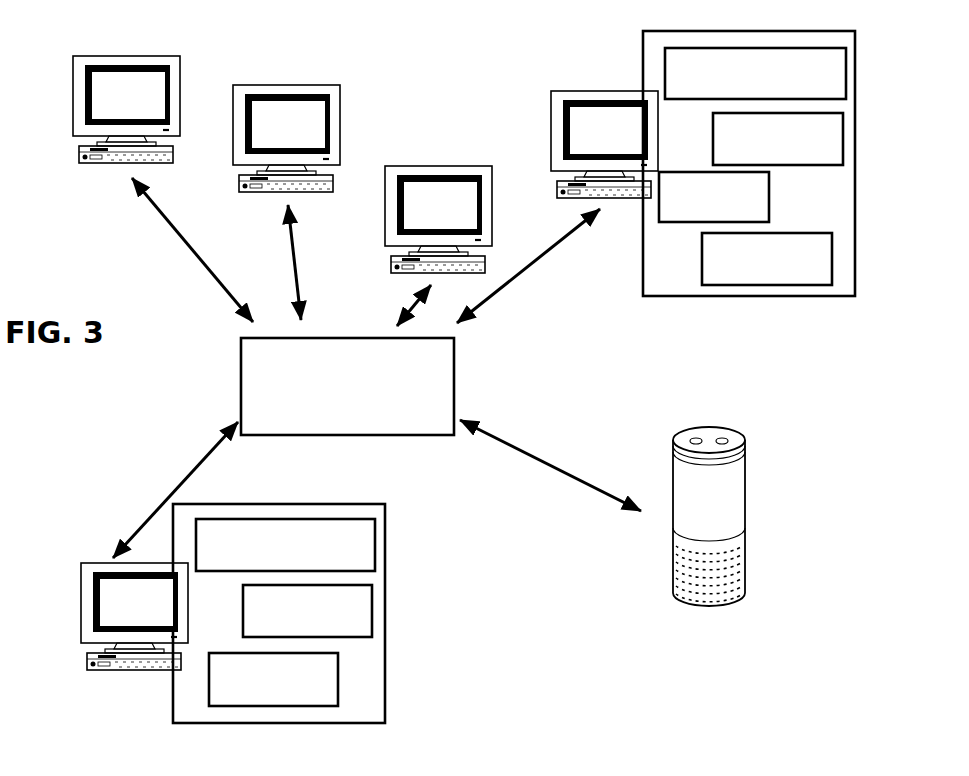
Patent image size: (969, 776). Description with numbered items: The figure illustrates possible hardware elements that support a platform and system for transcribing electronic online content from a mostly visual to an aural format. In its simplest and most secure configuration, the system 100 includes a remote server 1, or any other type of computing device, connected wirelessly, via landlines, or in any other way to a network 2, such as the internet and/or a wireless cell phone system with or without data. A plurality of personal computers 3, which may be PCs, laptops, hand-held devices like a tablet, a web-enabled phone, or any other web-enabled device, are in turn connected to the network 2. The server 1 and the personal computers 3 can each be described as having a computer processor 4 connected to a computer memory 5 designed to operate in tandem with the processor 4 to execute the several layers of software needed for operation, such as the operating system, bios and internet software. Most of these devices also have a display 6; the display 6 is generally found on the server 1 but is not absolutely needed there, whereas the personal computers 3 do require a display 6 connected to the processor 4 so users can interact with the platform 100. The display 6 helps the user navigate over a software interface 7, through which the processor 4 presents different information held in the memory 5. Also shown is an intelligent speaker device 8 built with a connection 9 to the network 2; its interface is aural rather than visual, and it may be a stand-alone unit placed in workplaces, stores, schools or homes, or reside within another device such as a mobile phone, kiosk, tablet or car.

The system 100 is at (510, 74).
The remote server 1 is at (80, 580).
The network 2 is at (241, 408).
The personal computers 3 is at (183, 80).
The computer processor 4 is at (802, 48).
The computer memory 5 is at (843, 132).
The display 6 is at (767, 202).
The software interface 7 is at (832, 248).
The intelligent speaker device 8 is at (746, 475).
The connection 9 is at (511, 441).